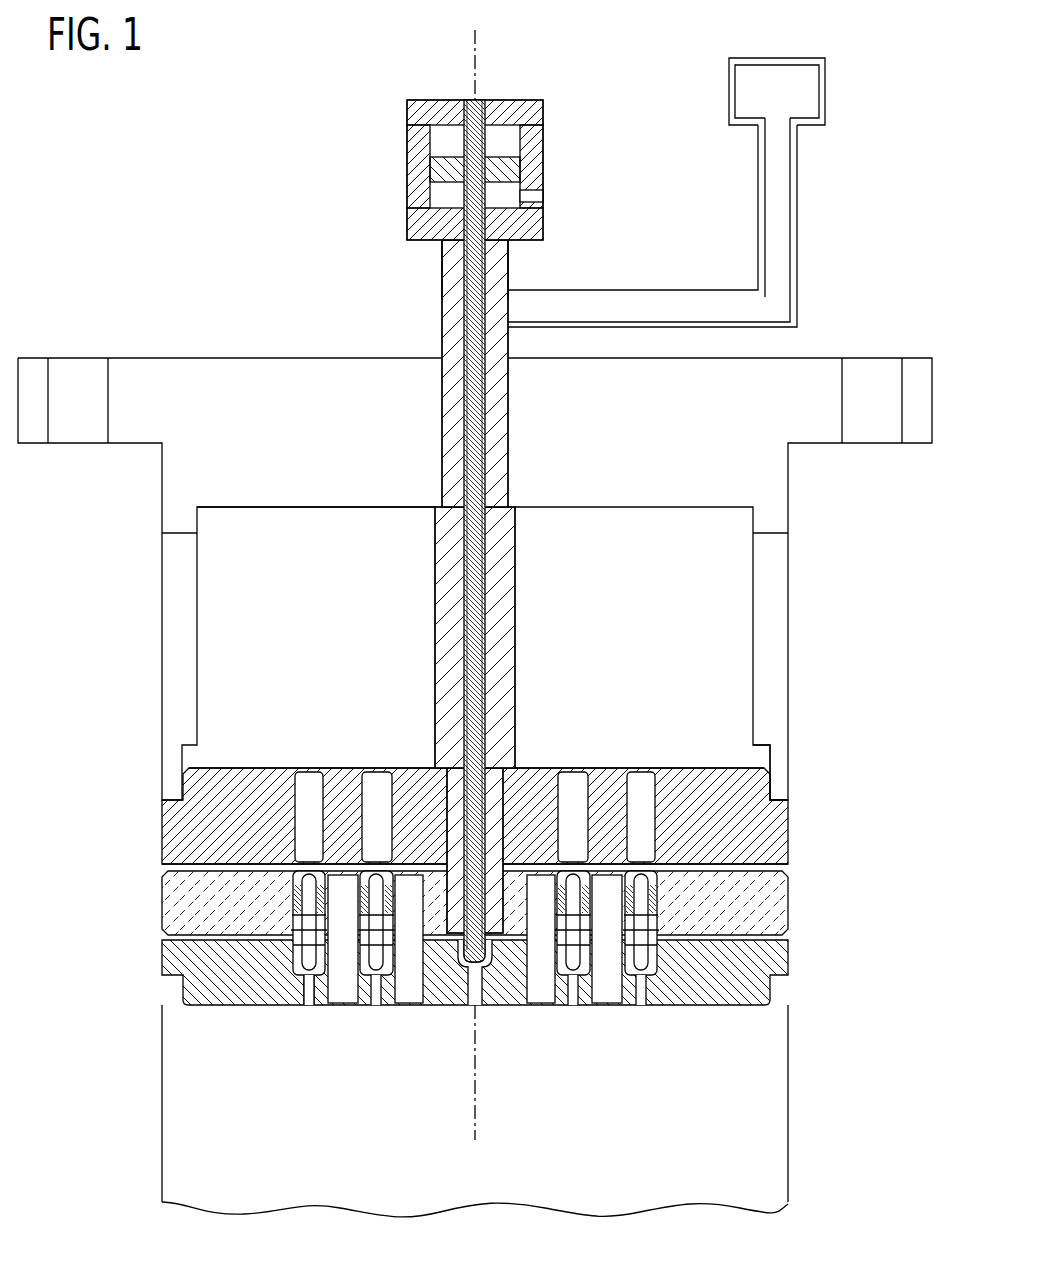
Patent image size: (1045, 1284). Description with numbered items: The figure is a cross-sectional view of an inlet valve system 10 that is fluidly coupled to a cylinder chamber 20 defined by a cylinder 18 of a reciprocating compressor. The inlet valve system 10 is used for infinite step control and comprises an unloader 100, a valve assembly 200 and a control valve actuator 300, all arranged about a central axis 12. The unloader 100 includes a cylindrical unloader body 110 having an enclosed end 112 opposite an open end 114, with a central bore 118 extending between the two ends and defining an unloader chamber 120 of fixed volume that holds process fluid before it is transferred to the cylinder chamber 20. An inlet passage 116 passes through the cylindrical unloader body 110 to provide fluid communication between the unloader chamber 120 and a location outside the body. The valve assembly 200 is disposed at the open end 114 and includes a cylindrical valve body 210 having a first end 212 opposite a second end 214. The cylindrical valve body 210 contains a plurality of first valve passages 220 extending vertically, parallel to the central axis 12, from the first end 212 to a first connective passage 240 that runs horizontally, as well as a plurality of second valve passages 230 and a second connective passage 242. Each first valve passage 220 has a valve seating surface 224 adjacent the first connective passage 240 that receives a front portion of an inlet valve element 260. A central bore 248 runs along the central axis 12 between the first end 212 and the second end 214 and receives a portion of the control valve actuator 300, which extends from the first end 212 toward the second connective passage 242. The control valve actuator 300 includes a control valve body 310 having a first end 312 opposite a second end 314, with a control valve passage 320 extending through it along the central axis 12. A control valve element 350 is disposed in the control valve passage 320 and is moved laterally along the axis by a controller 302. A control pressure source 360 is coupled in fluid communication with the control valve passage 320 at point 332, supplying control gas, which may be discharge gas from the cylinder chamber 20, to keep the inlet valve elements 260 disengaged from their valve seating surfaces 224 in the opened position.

The inlet valve system 10 is at (188, 157).
The central axis 12 is at (478, 45).
The cylinder 18 is at (162, 1097).
The cylinder chamber 20 is at (601, 1133).
The unloader 100 is at (868, 497).
The cylindrical unloader body 110 is at (789, 520).
The enclosed end 112 is at (769, 505).
The open end 114 is at (772, 800).
The inlet passage 116 is at (158, 658).
The central bore 118 is at (213, 618).
The unloader chamber 120 is at (613, 620).
The valve assembly 200 is at (828, 830).
The cylindrical valve body 210 is at (175, 830).
The first end 212 is at (237, 768).
The second end 214 is at (232, 1005).
The first valve passages 220 is at (377, 790).
The valve seating surface 224 is at (310, 858).
The second valve passages 230 is at (408, 988).
The first connective passage 240 is at (188, 872).
The second connective passage 242 is at (662, 935).
The central bore 248 is at (504, 764).
The inlet valve elements 260 is at (274, 907).
The control valve actuator 300 is at (568, 131).
The controller 302 is at (408, 165).
The control valve body 310 is at (442, 290).
The first end 312 is at (498, 244).
The second end 314 is at (497, 942).
The control valve passage 320 is at (466, 330).
The point 332 is at (518, 317).
The control valve element 350 is at (467, 955).
The control pressure source 360 is at (757, 105).